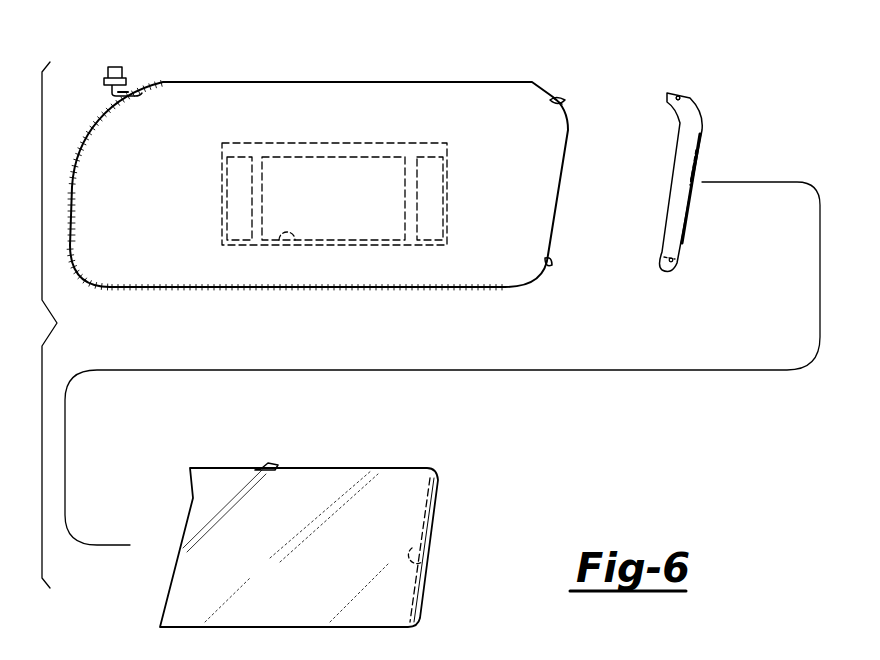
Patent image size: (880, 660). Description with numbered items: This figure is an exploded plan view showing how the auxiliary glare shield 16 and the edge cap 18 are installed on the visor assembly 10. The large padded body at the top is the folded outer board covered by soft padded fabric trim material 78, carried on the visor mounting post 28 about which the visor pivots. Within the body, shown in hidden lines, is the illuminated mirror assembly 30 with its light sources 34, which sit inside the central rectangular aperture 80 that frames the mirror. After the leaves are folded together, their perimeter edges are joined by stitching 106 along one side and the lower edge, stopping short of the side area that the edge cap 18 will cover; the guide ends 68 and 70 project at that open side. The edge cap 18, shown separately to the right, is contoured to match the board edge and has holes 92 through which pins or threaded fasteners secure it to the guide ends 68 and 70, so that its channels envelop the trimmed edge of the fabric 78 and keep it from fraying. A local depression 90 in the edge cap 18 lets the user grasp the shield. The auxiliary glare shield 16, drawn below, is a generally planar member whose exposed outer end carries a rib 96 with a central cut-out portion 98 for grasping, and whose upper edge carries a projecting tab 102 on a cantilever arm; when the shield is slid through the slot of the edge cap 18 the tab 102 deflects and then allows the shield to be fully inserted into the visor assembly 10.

The visor assembly 10 is at (376, 63).
The visor mounting post 28 is at (130, 90).
The illuminated mirror assembly 30 is at (406, 142).
The central rectangular aperture 80 is at (275, 245).
The stitching 106 is at (337, 287).
The light sources 34 is at (420, 243).
The soft padded fabric trim material 78 is at (542, 198).
The guide end 68 is at (562, 99).
The guide end 70 is at (552, 265).
The edge cap 18 is at (694, 130).
The holes 92 is at (678, 97).
The local depression 90 is at (697, 180).
The auxiliary glare shield 16 is at (368, 468).
The projecting tab 102 is at (265, 469).
The rib 96 is at (445, 508).
The central cut-out portion 98 is at (424, 563).